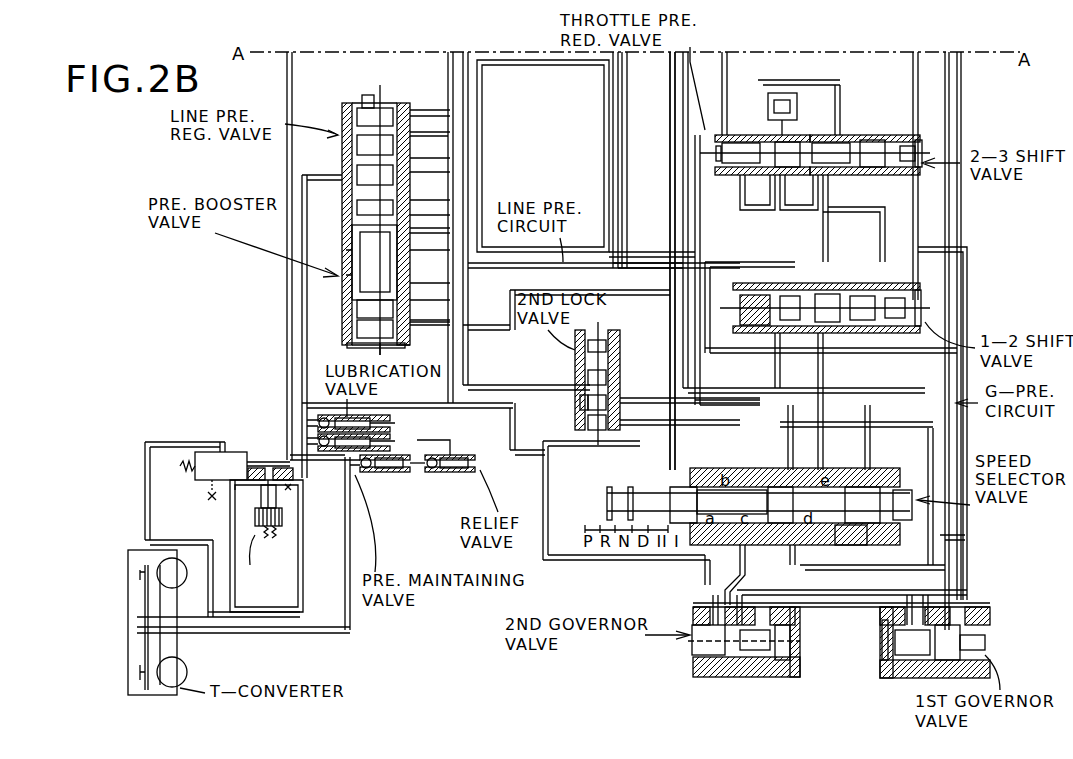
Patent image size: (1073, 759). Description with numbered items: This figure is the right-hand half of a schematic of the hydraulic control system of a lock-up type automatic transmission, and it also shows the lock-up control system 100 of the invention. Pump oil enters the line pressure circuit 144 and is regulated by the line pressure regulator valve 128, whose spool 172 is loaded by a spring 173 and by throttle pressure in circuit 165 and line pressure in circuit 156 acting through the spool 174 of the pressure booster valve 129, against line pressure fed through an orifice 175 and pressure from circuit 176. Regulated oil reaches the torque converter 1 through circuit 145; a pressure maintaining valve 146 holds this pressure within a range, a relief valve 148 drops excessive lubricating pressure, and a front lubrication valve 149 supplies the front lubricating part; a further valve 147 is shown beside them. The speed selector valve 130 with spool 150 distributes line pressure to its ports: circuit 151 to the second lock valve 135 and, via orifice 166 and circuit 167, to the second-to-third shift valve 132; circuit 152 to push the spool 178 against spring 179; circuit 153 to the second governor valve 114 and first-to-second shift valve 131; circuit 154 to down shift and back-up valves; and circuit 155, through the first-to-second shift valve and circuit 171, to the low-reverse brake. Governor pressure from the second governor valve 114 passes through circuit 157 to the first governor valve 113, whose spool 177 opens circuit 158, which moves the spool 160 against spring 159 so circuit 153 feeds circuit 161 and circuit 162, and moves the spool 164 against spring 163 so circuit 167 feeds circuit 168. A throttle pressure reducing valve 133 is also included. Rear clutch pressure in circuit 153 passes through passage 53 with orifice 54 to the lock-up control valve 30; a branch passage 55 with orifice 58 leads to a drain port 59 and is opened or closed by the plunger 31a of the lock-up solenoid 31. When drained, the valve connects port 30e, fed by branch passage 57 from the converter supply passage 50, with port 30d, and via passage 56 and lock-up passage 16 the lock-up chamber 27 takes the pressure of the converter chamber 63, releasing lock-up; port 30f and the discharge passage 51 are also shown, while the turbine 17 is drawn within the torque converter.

The torque converter 1 is at (185, 648).
The lock-up passage 16 is at (200, 612).
The turbine 17 is at (128, 668).
The lock-up chamber 27 is at (137, 610).
The lock-up control valve 30 is at (233, 476).
The port 30d is at (232, 430).
The port 30e is at (230, 492).
The port 30f is at (208, 486).
The lock-up solenoid 31 is at (266, 540).
The plunger 31a is at (291, 488).
The annular oil feed passage 50 is at (285, 610).
The oil discharge passage 51 is at (284, 634).
The passage 53 is at (290, 440).
The orifice 54 is at (295, 463).
The branch passage 55 is at (250, 548).
The passage 56 is at (145, 490).
The branch passage 57 is at (283, 545).
The orifice 58 is at (271, 468).
The drain port 59 is at (288, 500).
The converter chamber 63 is at (160, 562).
The lock-up control system 100 is at (198, 420).
The first governor valve 113 is at (880, 645).
The second governor valve 114 is at (849, 677).
The line pressure regulator valve 128 is at (366, 103).
The pressure booster valve 129 is at (357, 338).
The speed selector valve 130 is at (605, 510).
The 1-2 shift valve 131 is at (930, 295).
The 2-3 shift valve 132 is at (930, 142).
The throttle pressure reducing valve 133 is at (745, 176).
The second lock valve 135 is at (656, 328).
The line pressure circuit 144 is at (455, 70).
The circuit 145 is at (318, 172).
The pressure maintaining valve 146 is at (370, 470).
The valve 147 is at (418, 466).
The relief valve 148 is at (462, 470).
The front lubrication valve 149 is at (390, 422).
The spool 150 is at (675, 492).
The circuit 151 is at (718, 132).
The circuit 152 is at (620, 375).
The circuit 153 is at (286, 74).
The circuit 154 is at (950, 70).
The circuit 155 is at (835, 365).
The circuit 156 is at (797, 80).
The circuit 157 is at (835, 607).
The circuit 158 is at (912, 75).
The spring 159 is at (725, 340).
The spool 160 is at (925, 318).
The circuit 161 is at (795, 290).
The circuit 162 is at (462, 88).
The spring 163 is at (790, 182).
The spool 164 is at (900, 180).
The circuit 165 is at (612, 66).
The orifice 166 is at (797, 106).
The circuit 167 is at (835, 140).
The circuit 168 is at (482, 108).
The circuit 171 is at (950, 90).
The spool 172 is at (360, 104).
The spring 173 is at (360, 270).
The spool 174 is at (382, 340).
The orifice 175 is at (447, 140).
The circuit 176 is at (447, 70).
The spool 177 is at (878, 660).
The spool 178 is at (578, 400).
The spring 179 is at (578, 420).